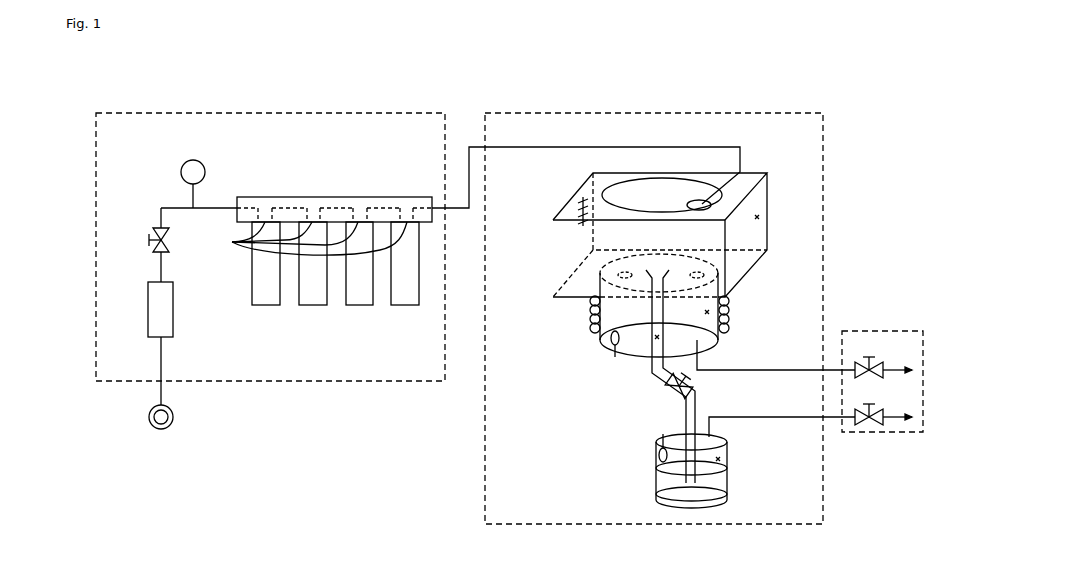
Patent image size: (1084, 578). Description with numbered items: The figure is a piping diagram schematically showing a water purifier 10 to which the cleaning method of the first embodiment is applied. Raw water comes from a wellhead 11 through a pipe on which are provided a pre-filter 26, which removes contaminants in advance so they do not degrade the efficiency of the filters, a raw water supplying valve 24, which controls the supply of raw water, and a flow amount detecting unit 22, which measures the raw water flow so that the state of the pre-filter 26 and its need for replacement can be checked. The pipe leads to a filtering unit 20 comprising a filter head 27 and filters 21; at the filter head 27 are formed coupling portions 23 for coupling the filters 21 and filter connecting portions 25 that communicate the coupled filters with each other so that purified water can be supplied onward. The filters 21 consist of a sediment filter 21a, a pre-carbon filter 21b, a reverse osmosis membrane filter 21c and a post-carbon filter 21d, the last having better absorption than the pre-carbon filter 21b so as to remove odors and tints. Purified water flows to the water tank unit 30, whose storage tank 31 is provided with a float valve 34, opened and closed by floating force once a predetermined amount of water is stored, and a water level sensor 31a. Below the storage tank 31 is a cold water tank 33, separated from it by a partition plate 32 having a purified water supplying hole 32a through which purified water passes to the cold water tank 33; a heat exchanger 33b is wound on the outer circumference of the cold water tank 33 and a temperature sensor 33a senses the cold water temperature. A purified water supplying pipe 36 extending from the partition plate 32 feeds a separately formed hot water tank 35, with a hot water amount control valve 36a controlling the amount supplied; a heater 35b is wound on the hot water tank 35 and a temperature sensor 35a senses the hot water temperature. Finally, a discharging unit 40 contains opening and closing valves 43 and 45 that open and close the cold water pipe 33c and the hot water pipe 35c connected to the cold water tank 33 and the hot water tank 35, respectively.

The water purifier 10 is at (104, 66).
The wellhead 11 is at (148, 417).
The filtering unit 20 is at (252, 112).
The filter 21 is at (256, 349).
The sediment filter 21a is at (266, 305).
The pre-carbon filter 21b is at (313, 305).
The reverse osmosis membrane filter 21c is at (360, 305).
The post-carbon filter 21d is at (405, 305).
The flow amount detecting unit 22 is at (193, 160).
The coupling portions 23 is at (232, 242).
The raw water supplying valve 24 is at (152, 236).
The filter connecting portions 25 is at (288, 207).
The pre-filter 26 is at (148, 308).
The filter head 27 is at (313, 197).
The water tank unit 30 is at (653, 112).
The storage tank 31 is at (760, 217).
The water level sensor 31a is at (581, 199).
The partition plate 32 is at (718, 272).
The purified water supplying hole 32a is at (603, 266).
The cold water tank 33 is at (711, 312).
The temperature sensor 33a is at (611, 343).
The heat exchanger 33b is at (590, 316).
The cold water pipe 33c is at (756, 370).
The float valve 34 is at (708, 203).
The hot water tank 35 is at (722, 459).
The temperature sensor 35a is at (659, 455).
The heater 35b is at (657, 488).
The hot water pipe 35c is at (761, 417).
The purified water supplying pipe 36 is at (655, 339).
The hot water amount control valve 36a is at (672, 391).
The discharging unit 40 is at (883, 331).
The opening and closing valve 43 is at (871, 360).
The opening and closing valve 45 is at (871, 405).